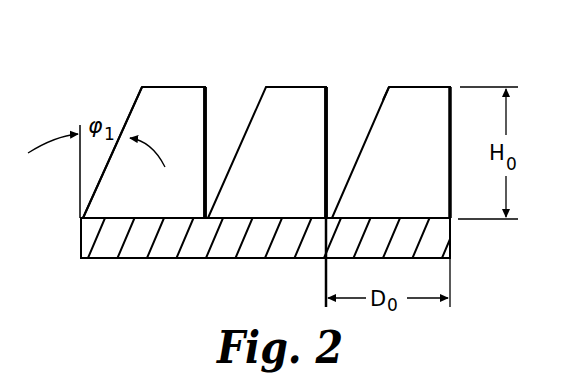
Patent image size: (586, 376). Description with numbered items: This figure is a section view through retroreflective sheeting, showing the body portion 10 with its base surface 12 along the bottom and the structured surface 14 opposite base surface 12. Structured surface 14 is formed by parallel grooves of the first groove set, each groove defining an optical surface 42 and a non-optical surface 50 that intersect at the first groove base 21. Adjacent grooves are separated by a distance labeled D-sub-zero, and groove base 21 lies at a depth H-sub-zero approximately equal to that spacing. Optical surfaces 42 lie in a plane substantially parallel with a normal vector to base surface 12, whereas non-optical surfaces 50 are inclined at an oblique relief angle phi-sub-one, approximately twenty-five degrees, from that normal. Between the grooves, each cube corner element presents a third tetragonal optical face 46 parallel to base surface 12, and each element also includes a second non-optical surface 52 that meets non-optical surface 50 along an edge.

The body portion 10 is at (441, 238).
The base surface 12 is at (267, 259).
The structured surface 14 is at (463, 68).
The first groove base 21 is at (207, 217).
The optical surface 42 is at (206, 100).
The third tetragonal optical face 46 is at (170, 87).
The first non-optical surface 50 is at (134, 101).
The second non-optical surface 52 is at (266, 152).